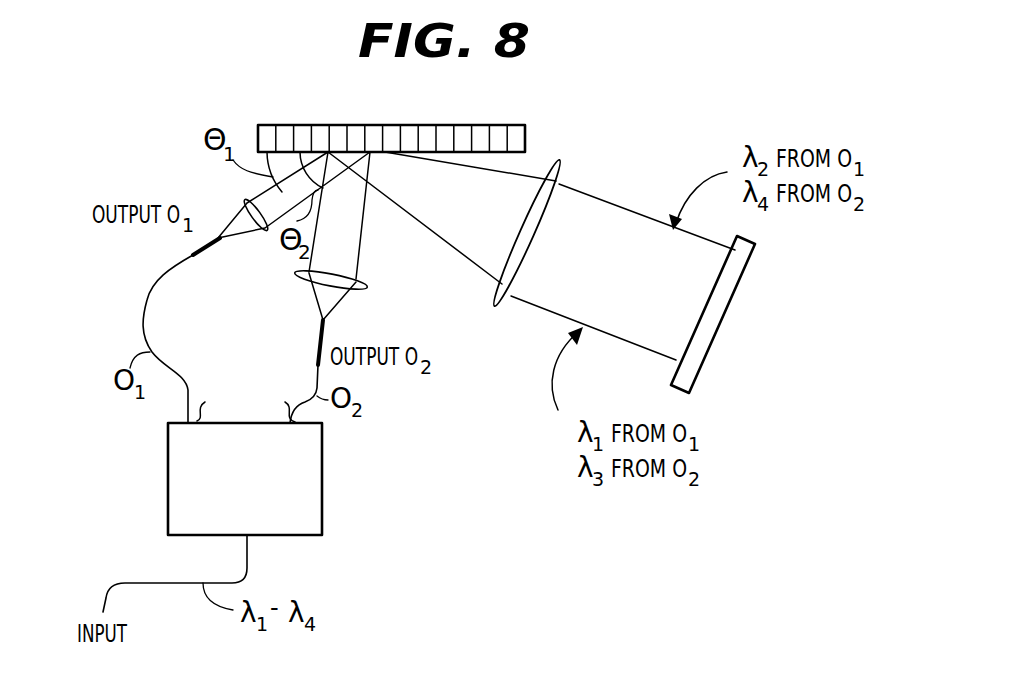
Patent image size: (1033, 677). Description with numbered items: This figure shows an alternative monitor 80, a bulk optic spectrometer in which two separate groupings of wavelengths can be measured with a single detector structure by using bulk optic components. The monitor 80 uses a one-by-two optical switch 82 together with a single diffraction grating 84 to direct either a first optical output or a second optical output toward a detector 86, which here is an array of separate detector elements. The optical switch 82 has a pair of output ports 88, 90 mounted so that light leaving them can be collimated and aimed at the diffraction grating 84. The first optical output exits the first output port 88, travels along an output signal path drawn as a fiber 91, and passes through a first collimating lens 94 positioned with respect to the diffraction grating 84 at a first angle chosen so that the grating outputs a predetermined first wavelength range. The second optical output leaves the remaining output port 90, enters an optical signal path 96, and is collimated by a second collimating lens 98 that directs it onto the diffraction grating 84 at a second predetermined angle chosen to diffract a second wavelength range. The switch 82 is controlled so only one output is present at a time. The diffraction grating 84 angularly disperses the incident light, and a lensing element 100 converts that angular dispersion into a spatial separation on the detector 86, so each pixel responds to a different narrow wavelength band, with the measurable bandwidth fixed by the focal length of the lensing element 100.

The monitor 80 is at (476, 493).
The 1×2 optical switch 82 is at (322, 495).
The diffraction grating 84 is at (287, 124).
The detector 86 is at (725, 316).
The first output port 88 is at (216, 396).
The second output port 90 is at (276, 398).
The first output optical fiber 91 is at (140, 315).
The first collimating lens 94 is at (267, 237).
The optical signal path 96 is at (318, 353).
The second collimating lens 98 is at (380, 267).
The lensing element 100 is at (562, 163).